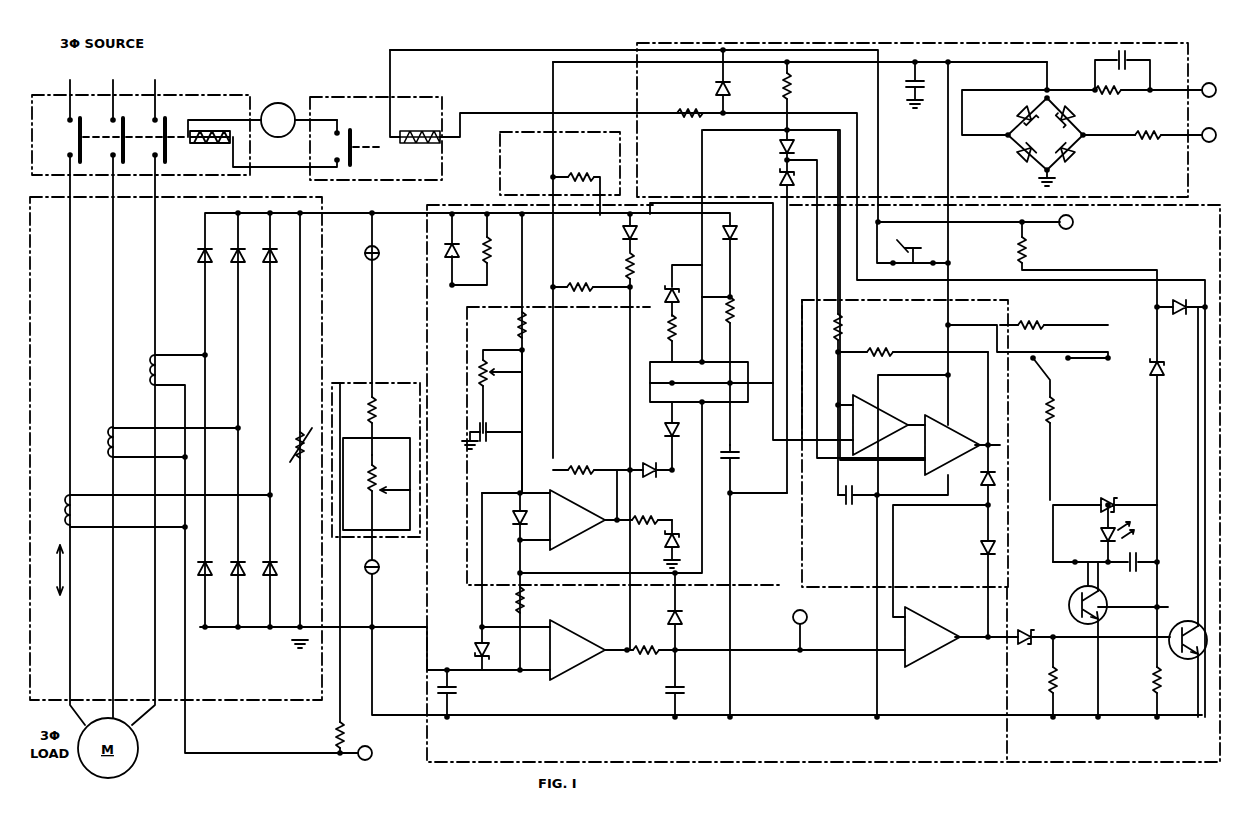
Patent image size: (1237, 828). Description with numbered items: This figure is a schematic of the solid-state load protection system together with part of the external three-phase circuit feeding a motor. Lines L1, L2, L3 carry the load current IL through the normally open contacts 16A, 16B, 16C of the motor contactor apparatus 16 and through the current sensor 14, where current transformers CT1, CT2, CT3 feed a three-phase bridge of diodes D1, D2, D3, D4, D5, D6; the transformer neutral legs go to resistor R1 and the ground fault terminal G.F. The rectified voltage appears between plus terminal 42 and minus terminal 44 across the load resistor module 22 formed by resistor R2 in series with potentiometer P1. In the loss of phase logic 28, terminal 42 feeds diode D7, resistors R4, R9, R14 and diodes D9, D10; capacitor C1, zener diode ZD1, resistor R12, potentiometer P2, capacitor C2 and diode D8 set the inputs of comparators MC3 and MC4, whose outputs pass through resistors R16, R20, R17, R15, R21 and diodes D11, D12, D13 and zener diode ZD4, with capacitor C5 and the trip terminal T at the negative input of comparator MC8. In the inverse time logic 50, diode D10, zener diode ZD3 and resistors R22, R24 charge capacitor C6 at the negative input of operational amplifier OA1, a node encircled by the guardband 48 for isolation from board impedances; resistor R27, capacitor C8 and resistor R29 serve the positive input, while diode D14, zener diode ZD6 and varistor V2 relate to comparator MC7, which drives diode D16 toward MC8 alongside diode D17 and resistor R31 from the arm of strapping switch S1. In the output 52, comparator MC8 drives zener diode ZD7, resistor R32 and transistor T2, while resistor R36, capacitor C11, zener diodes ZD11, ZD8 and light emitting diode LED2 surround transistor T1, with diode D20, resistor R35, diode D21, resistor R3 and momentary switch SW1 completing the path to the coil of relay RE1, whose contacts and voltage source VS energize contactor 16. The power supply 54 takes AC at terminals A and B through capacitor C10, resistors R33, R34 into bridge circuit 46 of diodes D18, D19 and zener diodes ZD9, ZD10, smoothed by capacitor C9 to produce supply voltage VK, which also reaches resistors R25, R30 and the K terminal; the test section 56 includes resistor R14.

The current sensor 14 is at (176, 448).
The motor contactor apparatus 16 is at (183, 102).
The contact 16A is at (65, 118).
The contact 16B is at (110, 118).
The contact 16C is at (155, 118).
The load resistor module 22 is at (356, 384).
The loss of phase logic 28 is at (823, 483).
The plus terminal 42 is at (379, 258).
The minus terminal 44 is at (385, 564).
The power supply bridge circuit 46 is at (1048, 124).
The guardband 48 is at (742, 362).
The inverse time logic 50 is at (874, 443).
The output 52 is at (1062, 674).
The power supply circuitry 54 is at (912, 120).
The test 56 is at (560, 163).
The relay RE1 is at (347, 96).
The voltage source VS is at (299, 120).
The line L1 is at (68, 91).
The line L2 is at (111, 91).
The line L3 is at (153, 91).
The current transformer CT1 is at (64, 511).
The current transformer CT2 is at (106, 438).
The current transformer CT3 is at (149, 366).
The load current IL is at (56, 574).
The diode D1 is at (198, 260).
The diode D2 is at (231, 260).
The diode D3 is at (264, 260).
The diode D4 is at (218, 560).
The diode D5 is at (251, 560).
The diode D6 is at (283, 560).
The diode D7 is at (470, 238).
The diode D8 is at (508, 512).
The diode D9 is at (619, 238).
The diode D10 is at (738, 240).
The diode D11 is at (655, 464).
The diode D12 is at (653, 442).
The diode D13 is at (683, 620).
The diode D14 is at (780, 147).
The diode D16 is at (981, 486).
The diode D17 is at (975, 550).
The diode D18 is at (1012, 154).
The diode D19 is at (1074, 150).
The diode D20 is at (1187, 311).
The diode D21 is at (712, 88).
The zener diode ZD1 is at (490, 654).
The zener diode ZD3 is at (656, 286).
The zener diode ZD4 is at (664, 540).
The zener diode ZD6 is at (778, 182).
The zener diode ZD7 is at (1024, 628).
The zener diode ZD8 is at (1088, 500).
The zener diode ZD9 is at (1016, 118).
The zener diode ZD10 is at (1078, 112).
The zener diode ZD11 is at (1144, 364).
The resistor R1 is at (328, 733).
The resistor R2 is at (376, 422).
The resistor R3 is at (677, 114).
The resistor R4 is at (498, 246).
The resistor R9 is at (514, 329).
The resistor R12 is at (524, 604).
The resistor R14 is at (571, 168).
The resistor R15 is at (568, 286).
The resistor R16 is at (570, 478).
The resistor R17 is at (624, 261).
The resistor R20 is at (651, 515).
The resistor R21 is at (648, 656).
The resistor R22 is at (658, 338).
The resistor R24 is at (734, 314).
The resistor R25 is at (794, 82).
The resistor R27 is at (845, 336).
The resistor R29 is at (883, 353).
The resistor R30 is at (1033, 320).
The resistor R31 is at (1053, 412).
The resistor R32 is at (1046, 684).
The resistor R33 is at (1107, 98).
The resistor R34 is at (1118, 134).
The resistor R35 is at (1030, 252).
The resistor R36 is at (1147, 684).
The potentiometer P1 is at (378, 506).
The potentiometer P2 is at (488, 398).
The capacitor C1 is at (462, 691).
The capacitor C2 is at (488, 442).
The capacitor C5 is at (663, 688).
The capacitor C6 is at (736, 448).
The capacitor C8 is at (842, 500).
The smoothing capacitor C9 is at (898, 84).
The capacitor C10 is at (1136, 54).
The capacitor C11 is at (1134, 570).
The comparator MC3 is at (570, 520).
The comparator MC4 is at (588, 650).
The comparator MC7 is at (939, 408).
The comparator MC8 is at (961, 637).
The operational amplifier OA1 is at (881, 425).
The NPN transistor T1 is at (1072, 596).
The NPN transistor T2 is at (1178, 638).
The light emitting diode LED2 is at (1093, 544).
The switch SW1 is at (914, 244).
The strapping switch S1 is at (1052, 372).
The varistor V2 is at (799, 164).
The supply voltage VK is at (1058, 69).
The supply terminal K is at (1073, 223).
The trip terminal T is at (789, 631).
The power supply terminal A is at (1209, 82).
The power supply terminal B is at (1209, 144).
The ground fault terminal G.F. is at (370, 753).